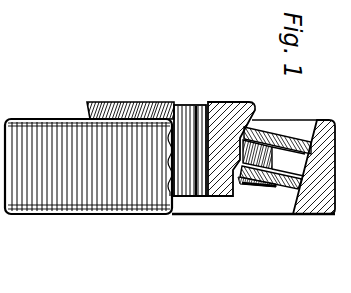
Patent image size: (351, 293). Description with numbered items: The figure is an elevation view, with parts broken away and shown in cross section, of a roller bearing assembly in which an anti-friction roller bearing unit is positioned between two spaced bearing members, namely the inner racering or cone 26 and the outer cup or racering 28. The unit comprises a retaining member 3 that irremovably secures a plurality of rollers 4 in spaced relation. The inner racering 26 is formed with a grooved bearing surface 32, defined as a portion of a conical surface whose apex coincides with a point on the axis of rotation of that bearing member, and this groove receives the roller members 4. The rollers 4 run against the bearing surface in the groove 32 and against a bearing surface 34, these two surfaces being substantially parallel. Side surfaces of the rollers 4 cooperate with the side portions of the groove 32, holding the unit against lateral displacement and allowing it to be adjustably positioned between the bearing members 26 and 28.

The outer cup or racering 28 is at (42, 119).
The inner racering or cone 26 is at (218, 106).
The grooved bearing surface 32 is at (239, 143).
The retaining member 3 is at (276, 158).
The bearing surface 34 is at (304, 208).
The rollers 4 is at (318, 127).